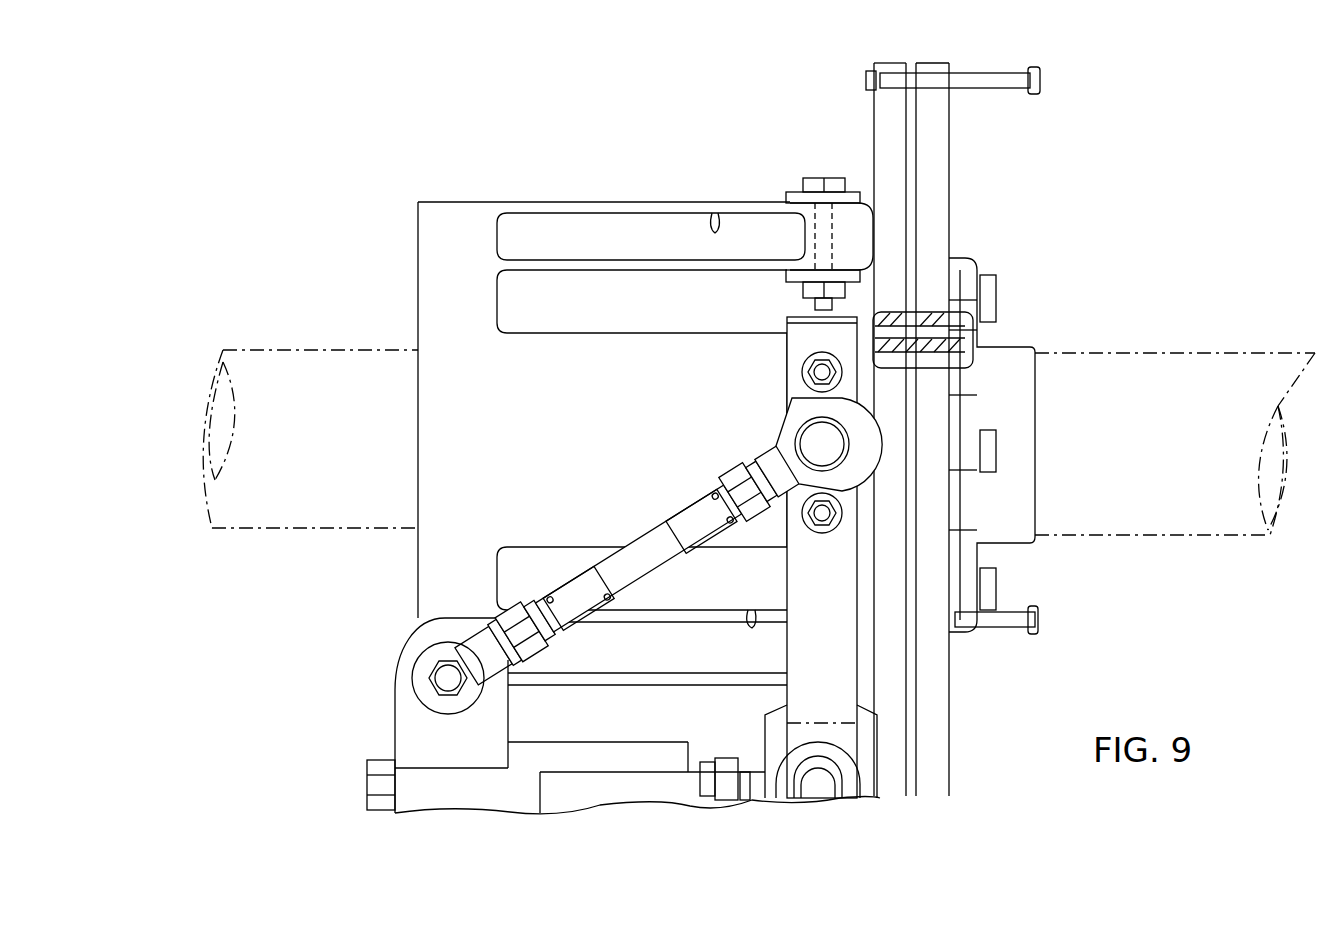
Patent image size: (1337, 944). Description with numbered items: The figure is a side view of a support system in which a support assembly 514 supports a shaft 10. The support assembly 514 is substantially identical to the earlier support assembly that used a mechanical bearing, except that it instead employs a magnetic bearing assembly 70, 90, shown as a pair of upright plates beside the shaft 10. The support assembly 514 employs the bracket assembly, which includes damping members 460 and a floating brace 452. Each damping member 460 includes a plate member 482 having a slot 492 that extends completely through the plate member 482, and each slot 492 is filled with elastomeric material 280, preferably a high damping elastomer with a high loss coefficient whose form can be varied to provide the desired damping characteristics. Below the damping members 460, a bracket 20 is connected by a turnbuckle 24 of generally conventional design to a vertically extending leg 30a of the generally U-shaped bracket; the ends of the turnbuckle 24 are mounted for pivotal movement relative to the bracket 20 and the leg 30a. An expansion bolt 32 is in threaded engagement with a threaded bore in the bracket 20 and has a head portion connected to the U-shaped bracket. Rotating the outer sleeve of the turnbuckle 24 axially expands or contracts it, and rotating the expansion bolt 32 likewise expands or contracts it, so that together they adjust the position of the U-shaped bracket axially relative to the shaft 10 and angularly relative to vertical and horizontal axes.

The shaft 10 is at (315, 365).
The bracket 20 is at (410, 745).
The turnbuckle 24 is at (642, 535).
The leg 30a is at (848, 740).
The expansion bolt 32 is at (727, 792).
The magnetic bearing assembly 70 is at (888, 62).
The magnetic bearing assembly 90 is at (935, 62).
The elastomeric material 280 is at (600, 238).
The floating brace 452 is at (418, 270).
The damping member 460 is at (606, 484).
The plate member 482 is at (652, 207).
The slot 492 is at (715, 228).
The support assembly 514 is at (606, 461).